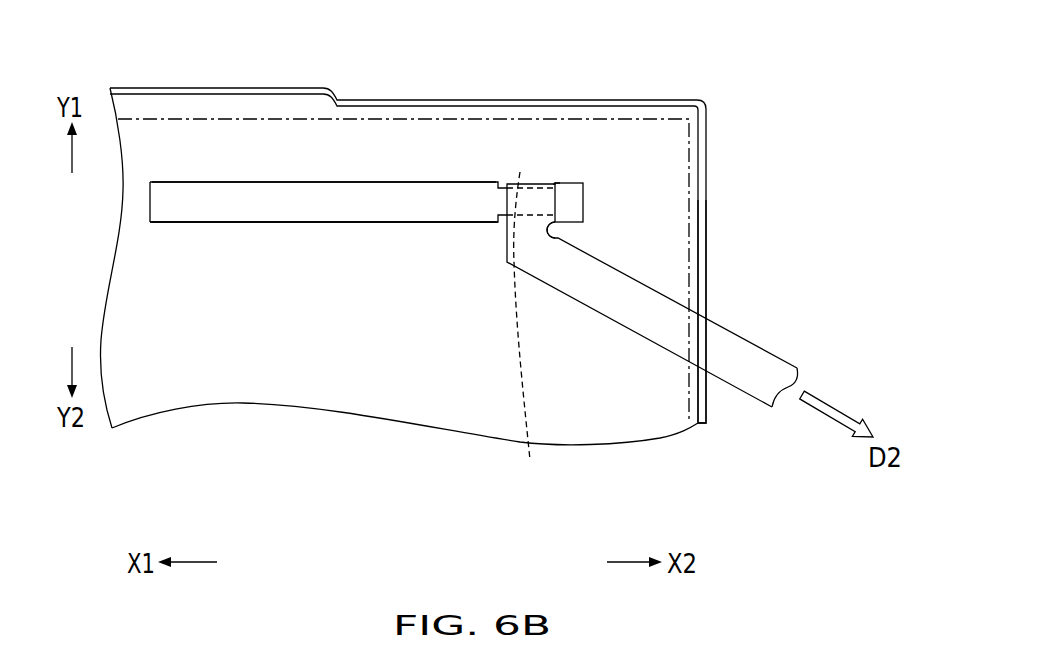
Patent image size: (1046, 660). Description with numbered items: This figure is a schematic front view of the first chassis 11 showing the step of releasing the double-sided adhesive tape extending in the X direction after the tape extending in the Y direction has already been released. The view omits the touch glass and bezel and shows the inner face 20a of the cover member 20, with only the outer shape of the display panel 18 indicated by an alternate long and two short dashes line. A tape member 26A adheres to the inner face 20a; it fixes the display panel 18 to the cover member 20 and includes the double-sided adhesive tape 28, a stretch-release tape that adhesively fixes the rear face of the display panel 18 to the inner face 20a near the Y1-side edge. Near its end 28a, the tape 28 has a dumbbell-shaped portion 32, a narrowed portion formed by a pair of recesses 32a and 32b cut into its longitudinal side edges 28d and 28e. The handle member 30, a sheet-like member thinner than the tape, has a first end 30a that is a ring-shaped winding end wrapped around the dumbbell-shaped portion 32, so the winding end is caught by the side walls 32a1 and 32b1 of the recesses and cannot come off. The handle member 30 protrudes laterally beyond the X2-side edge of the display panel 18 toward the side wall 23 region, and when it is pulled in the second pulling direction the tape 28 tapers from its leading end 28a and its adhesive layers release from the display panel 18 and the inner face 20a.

The first chassis 11 is at (121, 23).
The display panel 18 is at (282, 118).
The cover member 20 is at (153, 88).
The inner face 20a is at (235, 137).
The side wall 23 is at (655, 100).
The tape member 26A is at (328, 178).
The double-sided adhesive tape 28 is at (328, 178).
The end 28a is at (568, 200).
The side edge 28d is at (415, 181).
The side edge 28e is at (397, 222).
The handle member 30 is at (652, 281).
The first end 30a is at (534, 200).
The dumbbell-shaped portion 32 is at (527, 281).
The recess 32a is at (520, 172).
The side wall 32a1 is at (557, 176).
The recess 32b is at (547, 503).
The side wall 32b1 is at (556, 236).